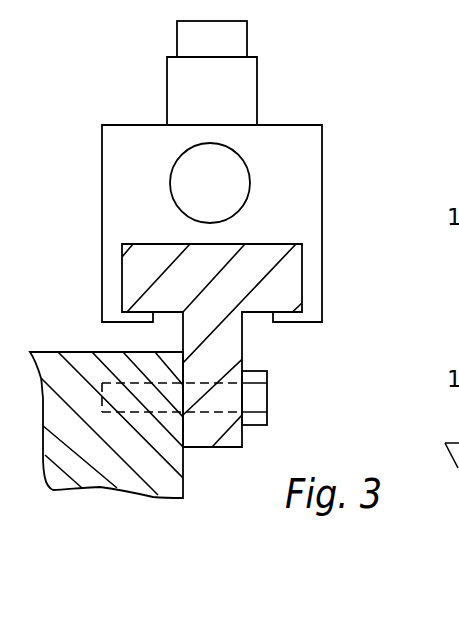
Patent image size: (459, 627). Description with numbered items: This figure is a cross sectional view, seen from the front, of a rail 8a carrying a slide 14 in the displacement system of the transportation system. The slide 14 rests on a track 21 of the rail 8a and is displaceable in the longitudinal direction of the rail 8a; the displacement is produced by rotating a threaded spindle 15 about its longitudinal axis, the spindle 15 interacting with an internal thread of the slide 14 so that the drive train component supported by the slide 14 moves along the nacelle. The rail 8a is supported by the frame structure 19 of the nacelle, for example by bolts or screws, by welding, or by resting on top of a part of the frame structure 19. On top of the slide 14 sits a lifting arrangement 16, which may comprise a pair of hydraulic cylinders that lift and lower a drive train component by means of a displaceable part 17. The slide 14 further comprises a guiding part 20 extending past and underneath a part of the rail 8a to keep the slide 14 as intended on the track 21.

The rail 8a is at (282, 283).
The slide 14 is at (102, 166).
The threaded spindle 15 is at (238, 172).
The lifting arrangement 16 is at (296, 82).
The displaceable part 17 is at (230, 31).
The frame structure 19 is at (70, 352).
The guiding part 20 is at (283, 317).
The track 21 is at (153, 243).